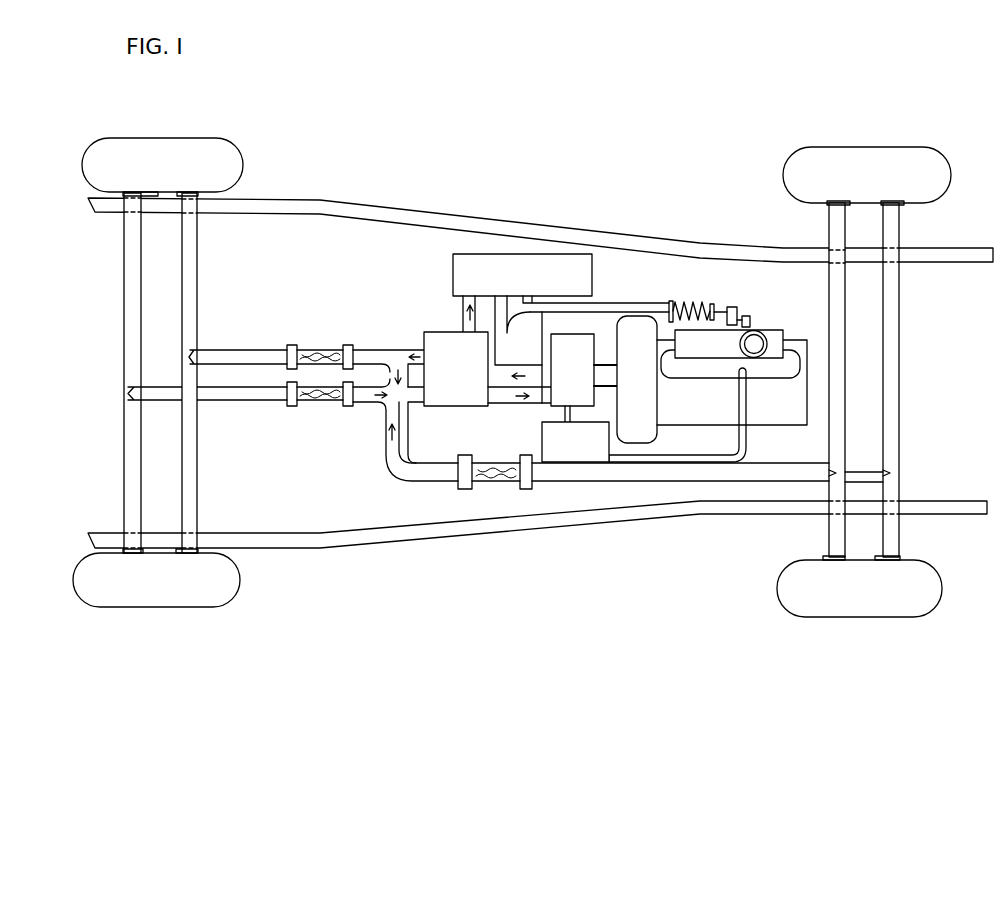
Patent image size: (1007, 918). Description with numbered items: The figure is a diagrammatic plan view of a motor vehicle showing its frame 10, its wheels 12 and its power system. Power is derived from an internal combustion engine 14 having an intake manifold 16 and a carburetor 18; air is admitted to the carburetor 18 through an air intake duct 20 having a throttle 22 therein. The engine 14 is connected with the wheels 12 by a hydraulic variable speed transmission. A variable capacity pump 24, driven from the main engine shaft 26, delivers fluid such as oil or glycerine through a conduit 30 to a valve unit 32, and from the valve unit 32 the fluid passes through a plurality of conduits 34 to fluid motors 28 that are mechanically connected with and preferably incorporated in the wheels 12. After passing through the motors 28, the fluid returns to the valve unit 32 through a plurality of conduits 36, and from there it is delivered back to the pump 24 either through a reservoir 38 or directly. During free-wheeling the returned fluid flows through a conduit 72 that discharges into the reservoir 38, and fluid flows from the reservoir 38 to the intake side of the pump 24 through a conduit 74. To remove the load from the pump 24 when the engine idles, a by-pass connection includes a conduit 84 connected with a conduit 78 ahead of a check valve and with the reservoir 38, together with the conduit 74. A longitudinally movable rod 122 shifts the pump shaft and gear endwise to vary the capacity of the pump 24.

The frame 10 is at (328, 212).
The wheels 12 is at (228, 152).
The internal combustion engine 14 is at (774, 420).
The intake manifold 16 is at (718, 370).
The carburetor 18 is at (692, 346).
The air intake duct 20 is at (742, 350).
The throttle 22 is at (756, 333).
The variable capacity pump 24 is at (592, 398).
The main engine shaft 26 is at (607, 368).
The fluid motors 28 is at (152, 204).
The conduit 30 is at (498, 382).
The valve unit 32 is at (452, 400).
The conduits 34 is at (192, 274).
The conduits 36 is at (136, 324).
The reservoir 38 is at (453, 273).
The conduit 72 is at (466, 312).
The conduit 74 is at (542, 333).
The conduit 78 is at (504, 352).
The conduit 84 is at (578, 300).
The longitudinally movable rod 122 is at (555, 413).